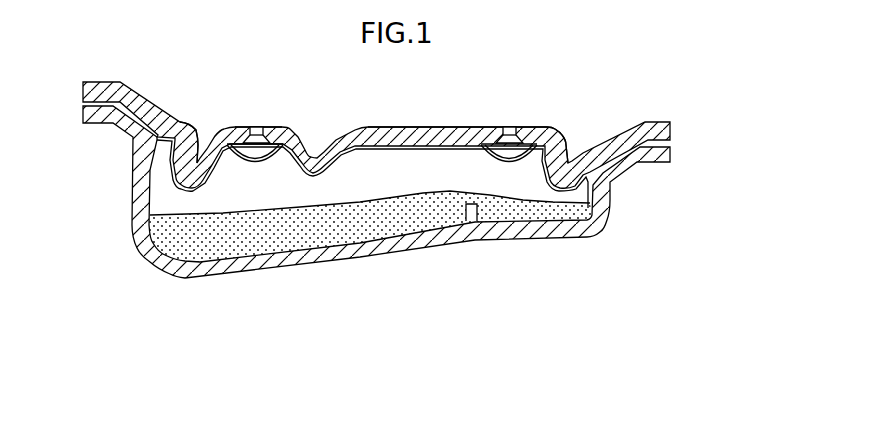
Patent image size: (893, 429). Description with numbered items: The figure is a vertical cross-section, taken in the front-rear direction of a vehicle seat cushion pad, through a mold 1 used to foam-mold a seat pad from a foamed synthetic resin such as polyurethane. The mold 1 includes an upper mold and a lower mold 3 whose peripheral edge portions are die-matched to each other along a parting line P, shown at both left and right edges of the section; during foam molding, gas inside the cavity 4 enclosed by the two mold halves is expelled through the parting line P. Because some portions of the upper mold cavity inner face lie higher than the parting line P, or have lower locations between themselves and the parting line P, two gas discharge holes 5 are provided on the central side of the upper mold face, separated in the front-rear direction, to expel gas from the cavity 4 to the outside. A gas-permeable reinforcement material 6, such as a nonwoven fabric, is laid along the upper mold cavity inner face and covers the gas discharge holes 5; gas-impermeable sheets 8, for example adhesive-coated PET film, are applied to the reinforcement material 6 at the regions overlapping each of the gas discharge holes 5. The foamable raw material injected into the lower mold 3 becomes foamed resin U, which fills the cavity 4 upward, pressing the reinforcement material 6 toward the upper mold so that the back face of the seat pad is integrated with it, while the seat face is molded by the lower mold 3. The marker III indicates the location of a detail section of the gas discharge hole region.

The mold 1 is at (693, 120).
The lower mold 3 is at (268, 268).
The cavity 4 is at (394, 181).
The gas discharge holes 5 is at (262, 140).
The reinforcement material 6 is at (418, 148).
The gas-impermeable sheets 8 is at (253, 160).
The parting line P is at (145, 108).
The foamed resin U is at (327, 237).
The section line III is at (505, 118).